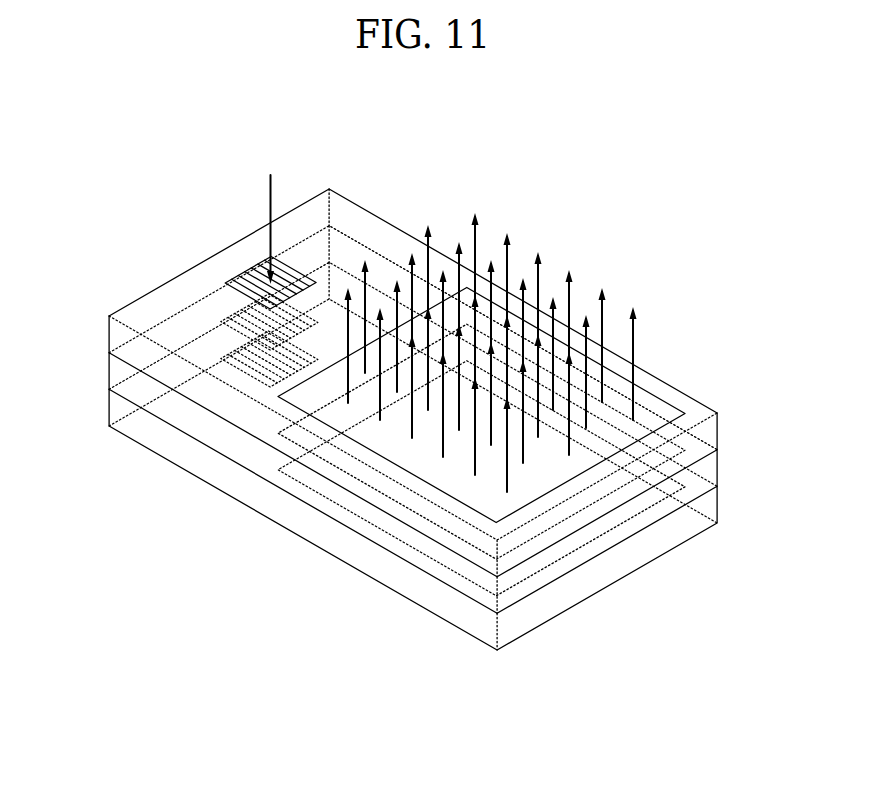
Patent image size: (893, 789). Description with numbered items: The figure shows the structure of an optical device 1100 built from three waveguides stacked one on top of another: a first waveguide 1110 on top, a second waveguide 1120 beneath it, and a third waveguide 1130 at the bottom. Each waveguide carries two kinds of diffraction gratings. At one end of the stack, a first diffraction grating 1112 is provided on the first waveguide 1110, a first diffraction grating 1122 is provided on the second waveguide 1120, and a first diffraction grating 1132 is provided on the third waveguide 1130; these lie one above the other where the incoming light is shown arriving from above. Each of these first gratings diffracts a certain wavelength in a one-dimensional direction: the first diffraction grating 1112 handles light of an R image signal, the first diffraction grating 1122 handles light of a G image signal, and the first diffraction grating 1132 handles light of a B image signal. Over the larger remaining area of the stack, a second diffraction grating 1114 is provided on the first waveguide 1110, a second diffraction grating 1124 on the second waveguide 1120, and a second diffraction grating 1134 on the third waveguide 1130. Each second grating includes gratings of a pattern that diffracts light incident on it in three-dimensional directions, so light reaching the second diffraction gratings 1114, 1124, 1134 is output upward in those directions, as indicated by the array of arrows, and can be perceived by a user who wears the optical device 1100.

The optical device 1100 is at (674, 213).
The first waveguide 1110 is at (118, 332).
The second waveguide 1120 is at (118, 373).
The third waveguide 1130 is at (118, 412).
The first diffraction grating 1112 is at (231, 277).
The first diffraction grating 1122 is at (234, 303).
The first diffraction grating 1132 is at (233, 347).
The second diffraction grating 1114 is at (712, 431).
The second diffraction grating 1124 is at (712, 470).
The second diffraction grating 1134 is at (712, 509).